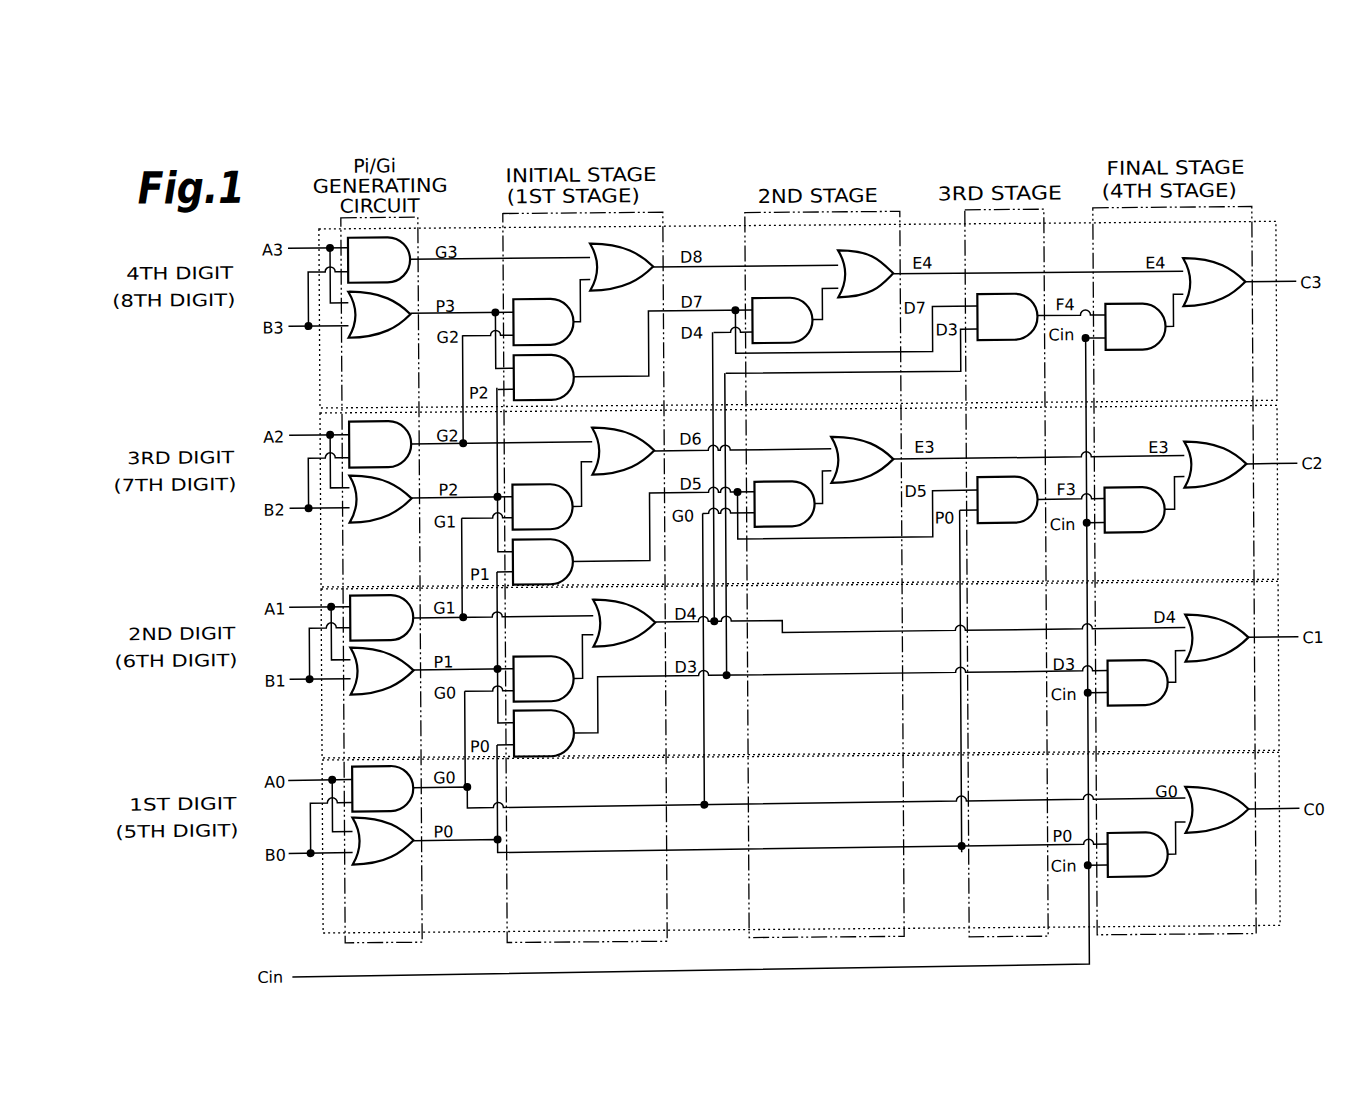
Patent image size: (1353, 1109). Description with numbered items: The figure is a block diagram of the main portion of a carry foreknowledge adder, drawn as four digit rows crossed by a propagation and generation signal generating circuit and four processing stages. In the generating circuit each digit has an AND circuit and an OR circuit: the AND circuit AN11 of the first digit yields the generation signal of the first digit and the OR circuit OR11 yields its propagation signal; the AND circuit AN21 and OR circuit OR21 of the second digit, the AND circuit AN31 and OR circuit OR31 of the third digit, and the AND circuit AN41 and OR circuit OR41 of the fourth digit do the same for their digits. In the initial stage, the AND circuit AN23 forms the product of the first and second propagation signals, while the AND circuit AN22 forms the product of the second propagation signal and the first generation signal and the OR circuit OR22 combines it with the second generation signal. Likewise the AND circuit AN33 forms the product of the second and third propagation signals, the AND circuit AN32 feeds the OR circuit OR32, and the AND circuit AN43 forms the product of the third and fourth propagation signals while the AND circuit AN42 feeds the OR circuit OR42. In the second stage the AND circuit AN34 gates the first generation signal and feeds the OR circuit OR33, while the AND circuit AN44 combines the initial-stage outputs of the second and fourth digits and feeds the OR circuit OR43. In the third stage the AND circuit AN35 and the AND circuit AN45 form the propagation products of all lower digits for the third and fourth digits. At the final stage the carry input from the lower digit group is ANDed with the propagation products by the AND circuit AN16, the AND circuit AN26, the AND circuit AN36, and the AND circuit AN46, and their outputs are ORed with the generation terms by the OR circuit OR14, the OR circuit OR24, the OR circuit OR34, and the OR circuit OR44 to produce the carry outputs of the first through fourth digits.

The AND circuit AN41 is at (379, 260).
The OR circuit OR41 is at (379, 314).
The AND circuit AN42 is at (543, 322).
The AND circuit AN43 is at (544, 378).
The OR circuit OR42 is at (621, 267).
The AND circuit AN44 is at (782, 321).
The OR circuit OR43 is at (865, 273).
The AND circuit AN45 is at (1007, 317).
The AND circuit AN46 is at (1135, 326).
The OR circuit OR44 is at (1214, 282).
The AND circuit AN31 is at (380, 444).
The OR circuit OR31 is at (380, 499).
The AND circuit AN32 is at (542, 507).
The AND circuit AN33 is at (543, 562).
The OR circuit OR32 is at (623, 451).
The AND circuit AN34 is at (784, 504).
The OR circuit OR33 is at (862, 459).
The AND circuit AN35 is at (1007, 499).
The AND circuit AN36 is at (1135, 510).
The OR circuit OR34 is at (1215, 464).
The AND circuit AN21 is at (381, 618).
The OR circuit OR21 is at (381, 671).
The AND circuit AN22 is at (543, 679).
The AND circuit AN23 is at (544, 733).
The OR circuit OR22 is at (624, 623).
The AND circuit AN26 is at (1138, 683).
The OR circuit OR24 is at (1216, 638).
The AND circuit AN11 is at (382, 789).
The OR circuit OR11 is at (382, 841).
The AND circuit AN16 is at (1138, 854).
The OR circuit OR14 is at (1216, 809).